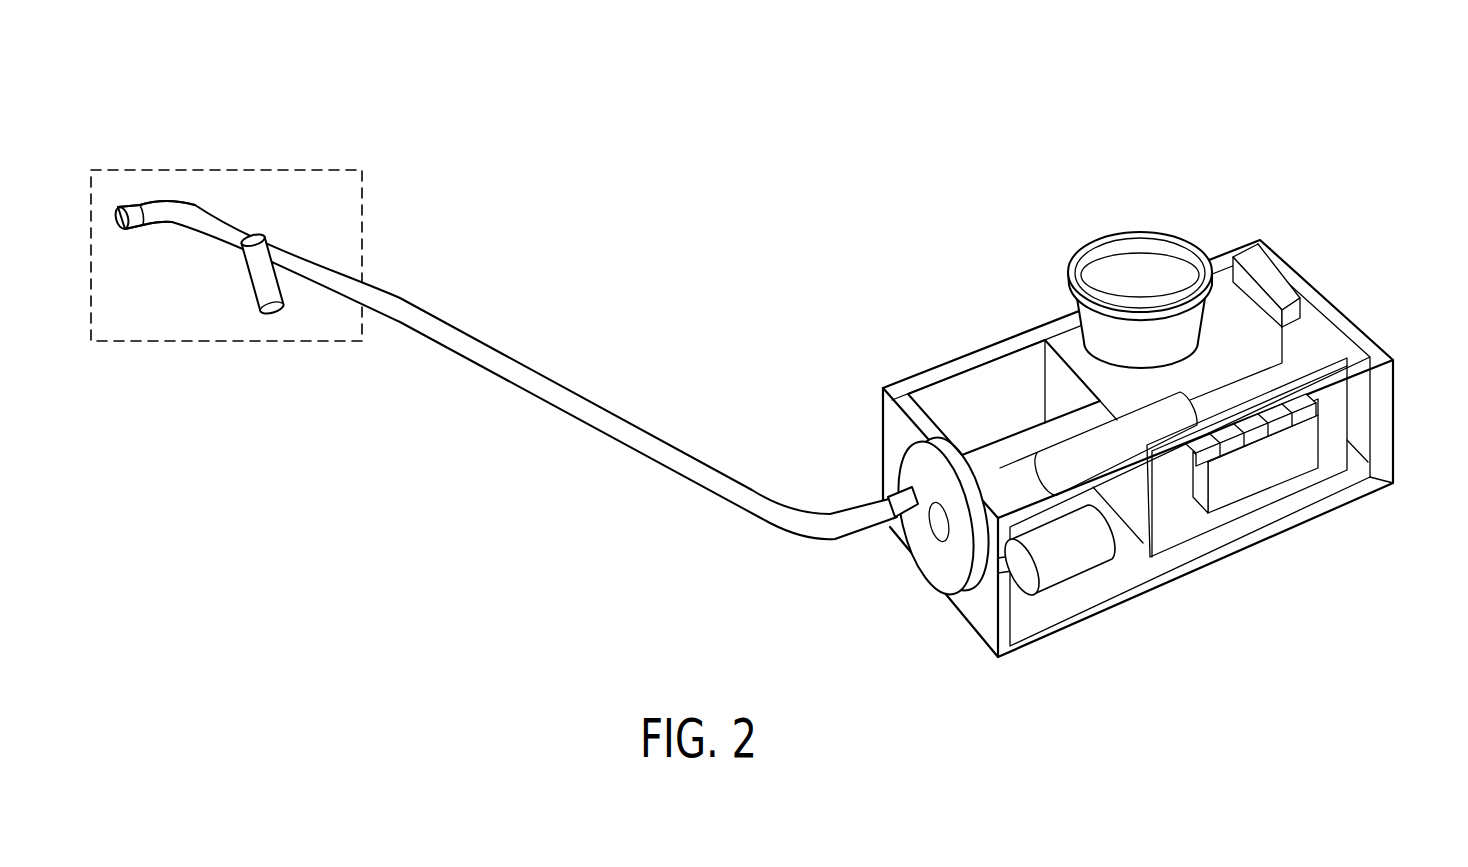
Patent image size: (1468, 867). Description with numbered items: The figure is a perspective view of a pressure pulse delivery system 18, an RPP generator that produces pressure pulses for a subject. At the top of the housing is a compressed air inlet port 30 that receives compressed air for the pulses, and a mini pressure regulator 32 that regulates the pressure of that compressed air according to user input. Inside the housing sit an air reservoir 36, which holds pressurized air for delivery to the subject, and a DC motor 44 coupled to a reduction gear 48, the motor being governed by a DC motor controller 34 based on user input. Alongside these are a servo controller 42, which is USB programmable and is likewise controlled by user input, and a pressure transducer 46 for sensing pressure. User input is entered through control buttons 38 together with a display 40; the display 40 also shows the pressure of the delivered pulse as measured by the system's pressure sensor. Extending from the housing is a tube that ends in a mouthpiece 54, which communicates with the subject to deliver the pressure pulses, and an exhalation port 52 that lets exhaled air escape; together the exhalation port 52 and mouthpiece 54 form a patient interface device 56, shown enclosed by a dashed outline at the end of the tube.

The pressure pulse delivery system 18 is at (1367, 283).
The compressed air inlet port 30 is at (1276, 268).
The mini pressure regulator 32 is at (1140, 226).
The DC motor controller 34 is at (1075, 270).
The air reservoir 36 is at (945, 405).
The control buttons 38 is at (1307, 413).
The display 40 is at (1272, 474).
The servo controller 42 is at (1248, 473).
The DC motor 44 is at (1107, 453).
The pressure transducer 46 is at (1067, 558).
The reduction gear 48 is at (976, 600).
The exhalation port 52 is at (273, 322).
The mouthpiece 54 is at (120, 207).
The patient interface device 56 is at (226, 170).